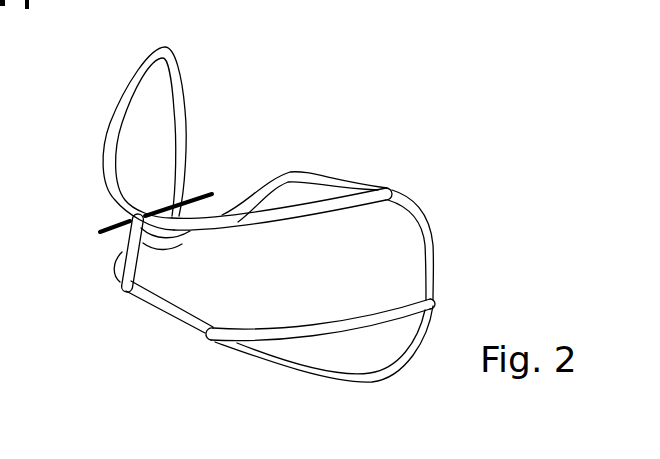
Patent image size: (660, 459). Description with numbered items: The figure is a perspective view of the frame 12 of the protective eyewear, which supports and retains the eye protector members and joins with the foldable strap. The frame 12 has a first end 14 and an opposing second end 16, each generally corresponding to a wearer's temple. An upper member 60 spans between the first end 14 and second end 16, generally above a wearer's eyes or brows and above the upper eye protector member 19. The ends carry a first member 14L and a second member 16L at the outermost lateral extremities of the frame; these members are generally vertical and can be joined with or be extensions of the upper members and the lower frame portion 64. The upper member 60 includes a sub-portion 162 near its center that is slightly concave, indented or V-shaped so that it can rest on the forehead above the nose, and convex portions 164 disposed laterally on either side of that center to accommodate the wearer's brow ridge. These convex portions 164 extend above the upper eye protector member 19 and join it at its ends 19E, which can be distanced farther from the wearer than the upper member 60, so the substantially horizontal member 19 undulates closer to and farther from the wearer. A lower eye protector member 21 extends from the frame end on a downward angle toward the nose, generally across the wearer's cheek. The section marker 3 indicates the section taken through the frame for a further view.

The frame 12 is at (438, 151).
The first end 14 is at (171, 42).
The first member 14L is at (182, 115).
The convex portion 164 is at (115, 125).
The section line 3- 3 is at (188, 194).
The sub-portion 162 is at (118, 200).
The upper member 60 is at (238, 212).
The upper eye protector member 19 is at (366, 190).
The end 19E is at (392, 192).
The second end 16 is at (447, 237).
The second member 16L is at (432, 266).
The lower eye protector member 21 is at (433, 304).
The lower frame portion 64 is at (158, 302).